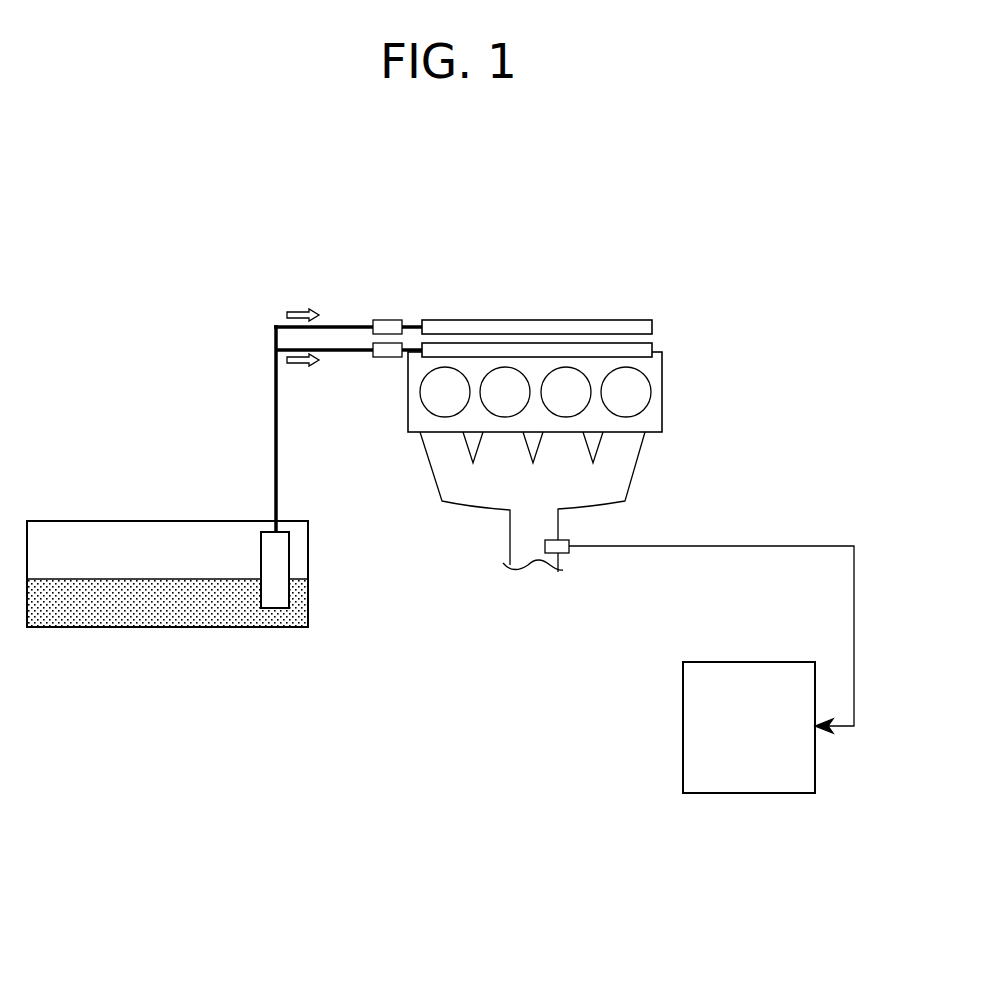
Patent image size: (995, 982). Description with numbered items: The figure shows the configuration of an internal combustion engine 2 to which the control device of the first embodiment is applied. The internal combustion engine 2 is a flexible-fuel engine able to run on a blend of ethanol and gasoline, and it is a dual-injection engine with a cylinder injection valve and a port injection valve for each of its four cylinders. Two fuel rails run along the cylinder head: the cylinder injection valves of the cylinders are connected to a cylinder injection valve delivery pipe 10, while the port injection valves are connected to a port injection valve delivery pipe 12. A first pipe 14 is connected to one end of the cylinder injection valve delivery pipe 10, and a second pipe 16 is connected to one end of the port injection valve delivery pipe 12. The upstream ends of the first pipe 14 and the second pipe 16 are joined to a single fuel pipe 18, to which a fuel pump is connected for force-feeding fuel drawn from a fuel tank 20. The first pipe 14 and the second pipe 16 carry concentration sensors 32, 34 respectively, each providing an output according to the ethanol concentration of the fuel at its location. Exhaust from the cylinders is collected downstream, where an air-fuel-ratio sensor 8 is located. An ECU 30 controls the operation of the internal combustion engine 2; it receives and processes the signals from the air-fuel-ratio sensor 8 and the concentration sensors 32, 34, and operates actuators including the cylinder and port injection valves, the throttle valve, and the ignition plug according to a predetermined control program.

The internal combustion engine 2 is at (692, 413).
The air-fuel-ratio sensor 8 is at (570, 555).
The cylinder injection valve delivery pipe 10 is at (492, 348).
The port injection valve delivery pipe 12 is at (557, 326).
The first pipe 14 is at (344, 356).
The second pipe 16 is at (344, 320).
The fuel pipe 18 is at (275, 395).
The fuel tank 20 is at (305, 553).
The ECU 30 is at (741, 662).
The concentration sensor 32 is at (389, 356).
The concentration sensor 34 is at (389, 320).